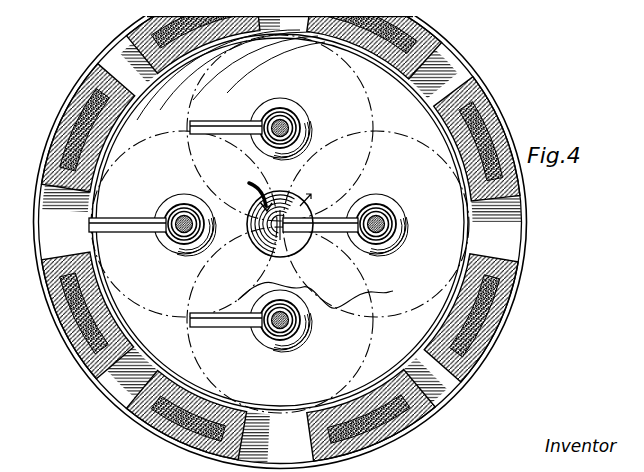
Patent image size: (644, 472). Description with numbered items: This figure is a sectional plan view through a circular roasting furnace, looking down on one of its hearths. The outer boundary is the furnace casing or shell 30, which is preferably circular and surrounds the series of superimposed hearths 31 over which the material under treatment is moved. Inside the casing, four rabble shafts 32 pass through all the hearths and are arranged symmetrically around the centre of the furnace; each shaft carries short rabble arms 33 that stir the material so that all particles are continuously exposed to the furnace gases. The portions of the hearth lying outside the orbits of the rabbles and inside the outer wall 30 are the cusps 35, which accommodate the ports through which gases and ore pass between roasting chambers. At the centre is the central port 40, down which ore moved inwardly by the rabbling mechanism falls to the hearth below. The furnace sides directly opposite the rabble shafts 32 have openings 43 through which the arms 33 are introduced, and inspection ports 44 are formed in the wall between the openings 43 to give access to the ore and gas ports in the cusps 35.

The furnace casing or shell 30 is at (58, 133).
The hearth 31 is at (286, 211).
The rabble shaft 32 is at (298, 121).
The rabble arm 33 is at (200, 127).
The cusp 35 is at (280, 221).
The central port 40 is at (264, 246).
The opening 43 is at (178, 322).
The inspection port 44 is at (106, 63).